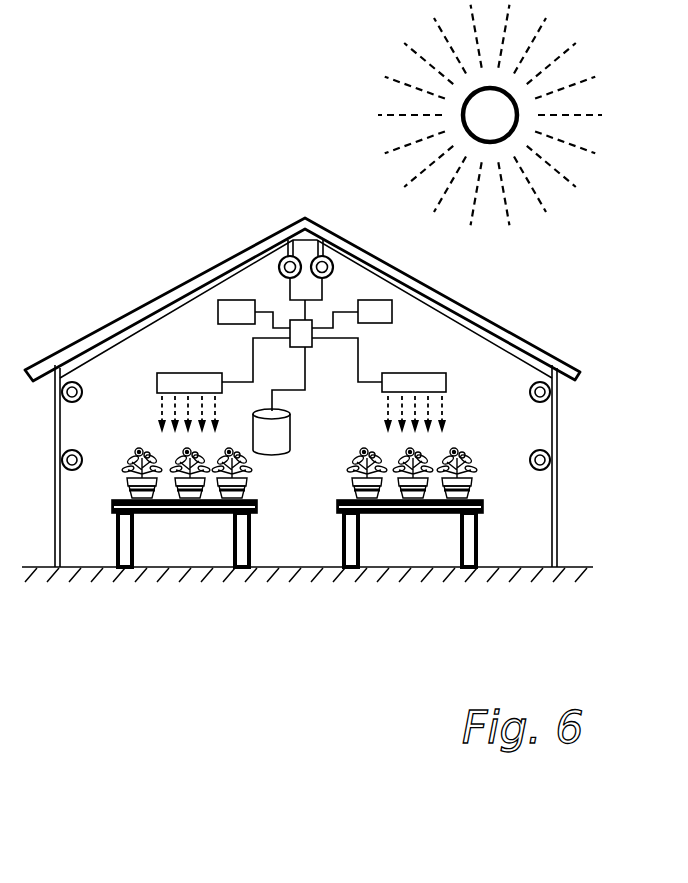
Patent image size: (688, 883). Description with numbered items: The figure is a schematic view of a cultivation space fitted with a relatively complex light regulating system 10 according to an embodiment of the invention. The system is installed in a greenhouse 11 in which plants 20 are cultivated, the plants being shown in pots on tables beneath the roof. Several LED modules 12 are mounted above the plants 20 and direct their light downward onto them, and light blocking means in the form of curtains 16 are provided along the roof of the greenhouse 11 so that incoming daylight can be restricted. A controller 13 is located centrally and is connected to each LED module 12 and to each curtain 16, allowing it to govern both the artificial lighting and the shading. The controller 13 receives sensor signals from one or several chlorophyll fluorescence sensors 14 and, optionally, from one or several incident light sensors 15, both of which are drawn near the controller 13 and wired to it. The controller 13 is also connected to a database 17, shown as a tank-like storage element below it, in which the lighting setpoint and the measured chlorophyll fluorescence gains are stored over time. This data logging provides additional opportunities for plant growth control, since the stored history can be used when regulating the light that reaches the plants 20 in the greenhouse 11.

The light regulating system 10 is at (310, 496).
The greenhouse 11 is at (519, 331).
The LED module 12 is at (174, 373).
The controller 13 is at (311, 347).
The chlorophyll fluorescence sensor 14 is at (238, 300).
The incident light sensor 15 is at (392, 312).
The curtain 16 is at (186, 314).
The database 17 is at (291, 433).
The plants 20 is at (467, 468).